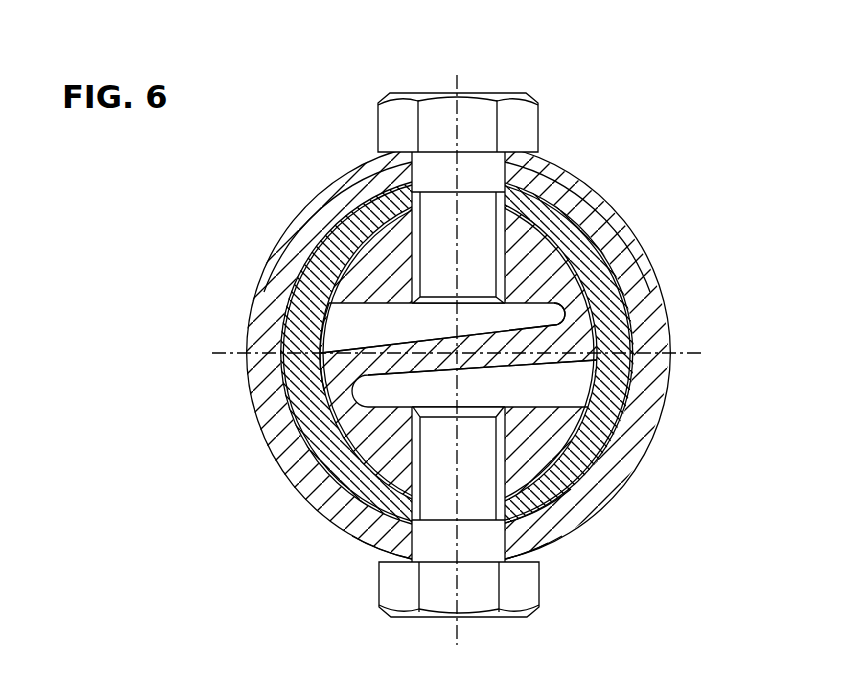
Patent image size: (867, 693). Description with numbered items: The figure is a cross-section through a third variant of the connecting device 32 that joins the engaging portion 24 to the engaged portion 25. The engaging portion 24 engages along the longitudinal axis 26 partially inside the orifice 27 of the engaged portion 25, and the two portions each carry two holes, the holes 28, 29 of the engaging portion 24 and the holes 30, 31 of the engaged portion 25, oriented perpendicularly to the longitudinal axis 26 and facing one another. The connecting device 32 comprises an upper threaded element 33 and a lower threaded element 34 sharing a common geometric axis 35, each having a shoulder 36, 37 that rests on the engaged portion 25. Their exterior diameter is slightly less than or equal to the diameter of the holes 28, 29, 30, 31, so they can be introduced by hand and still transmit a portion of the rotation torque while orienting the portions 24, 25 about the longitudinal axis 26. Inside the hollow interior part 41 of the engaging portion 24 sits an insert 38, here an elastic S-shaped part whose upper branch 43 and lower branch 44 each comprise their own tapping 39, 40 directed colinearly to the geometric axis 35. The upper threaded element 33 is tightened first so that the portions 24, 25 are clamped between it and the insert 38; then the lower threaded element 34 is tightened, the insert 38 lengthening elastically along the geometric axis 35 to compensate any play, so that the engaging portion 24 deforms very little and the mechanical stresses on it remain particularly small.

The engaging portion 24 is at (310, 277).
The engaged portion 25 is at (337, 210).
The longitudinal axis 26 is at (456, 354).
The orifice 27 is at (380, 547).
The hole 28 is at (372, 199).
The hole 29 is at (560, 500).
The hole 30 is at (378, 160).
The hole 31 is at (533, 537).
The connecting device 32 is at (544, 113).
The upper threaded element 33 is at (525, 133).
The lower threaded element 34 is at (525, 578).
The geometric axis 35 is at (457, 637).
The shoulder 36 is at (508, 153).
The shoulder 37 is at (548, 547).
The insert 38 is at (553, 335).
The tapping 39 is at (515, 272).
The tapping 40 is at (537, 457).
The interior part 41 is at (307, 360).
The upper branch 43 is at (520, 243).
The lower branch 44 is at (537, 430).